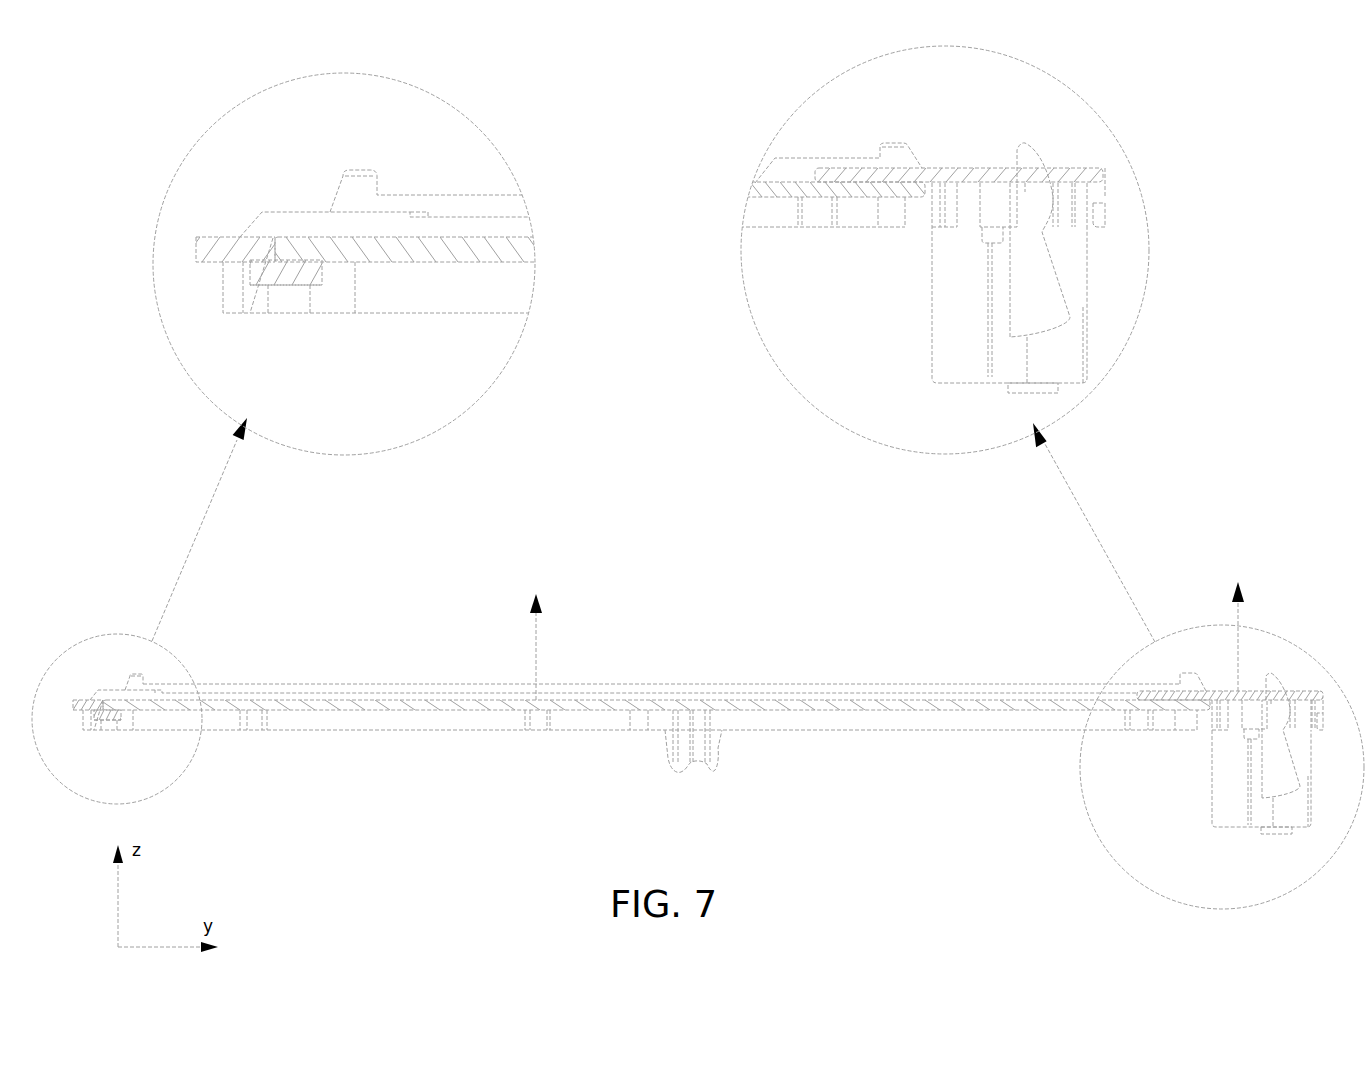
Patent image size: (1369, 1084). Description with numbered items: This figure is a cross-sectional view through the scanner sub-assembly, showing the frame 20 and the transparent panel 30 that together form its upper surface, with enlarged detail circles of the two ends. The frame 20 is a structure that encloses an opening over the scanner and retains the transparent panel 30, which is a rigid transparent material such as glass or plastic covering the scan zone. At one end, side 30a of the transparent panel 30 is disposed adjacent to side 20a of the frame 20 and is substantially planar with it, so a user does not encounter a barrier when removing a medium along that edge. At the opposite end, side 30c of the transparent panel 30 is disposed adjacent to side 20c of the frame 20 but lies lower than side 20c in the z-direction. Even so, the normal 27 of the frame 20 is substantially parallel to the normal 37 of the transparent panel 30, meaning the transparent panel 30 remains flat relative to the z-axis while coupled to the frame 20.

The frame 20 is at (1010, 731).
The side 20a is at (205, 237).
The side 20c is at (970, 168).
The normal 27 is at (1237, 655).
The transparent panel 30 is at (423, 700).
The side 30a is at (432, 263).
The side 30c is at (850, 198).
The normal 37 is at (537, 634).